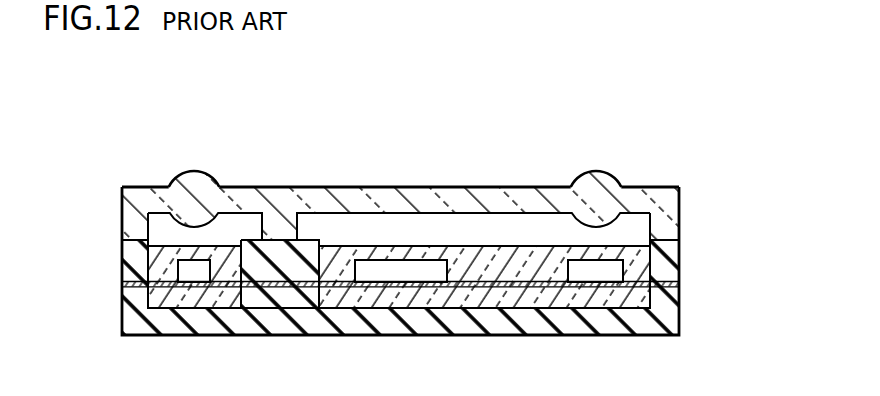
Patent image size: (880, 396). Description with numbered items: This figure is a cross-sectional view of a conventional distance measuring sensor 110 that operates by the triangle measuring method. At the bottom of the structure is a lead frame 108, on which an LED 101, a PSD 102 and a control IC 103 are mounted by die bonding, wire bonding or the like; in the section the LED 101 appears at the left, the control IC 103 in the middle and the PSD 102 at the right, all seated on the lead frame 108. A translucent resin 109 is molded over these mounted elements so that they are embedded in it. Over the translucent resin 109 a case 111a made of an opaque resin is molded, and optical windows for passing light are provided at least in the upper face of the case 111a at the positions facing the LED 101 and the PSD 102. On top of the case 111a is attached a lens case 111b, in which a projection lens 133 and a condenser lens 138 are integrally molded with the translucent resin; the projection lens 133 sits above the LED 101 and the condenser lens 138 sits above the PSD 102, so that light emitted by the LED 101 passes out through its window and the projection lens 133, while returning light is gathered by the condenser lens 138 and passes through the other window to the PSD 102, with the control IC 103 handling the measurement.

The conventional distance measuring sensor 110 is at (406, 158).
The case 111a is at (277, 322).
The lens case 111b is at (334, 190).
The projection lens 133 is at (195, 180).
The condenser lens 138 is at (597, 180).
The translucent resin 109 is at (165, 266).
The LED 101 is at (197, 272).
The control IC 103 is at (400, 272).
The PSD 102 is at (594, 272).
The lead frame 108 is at (507, 288).